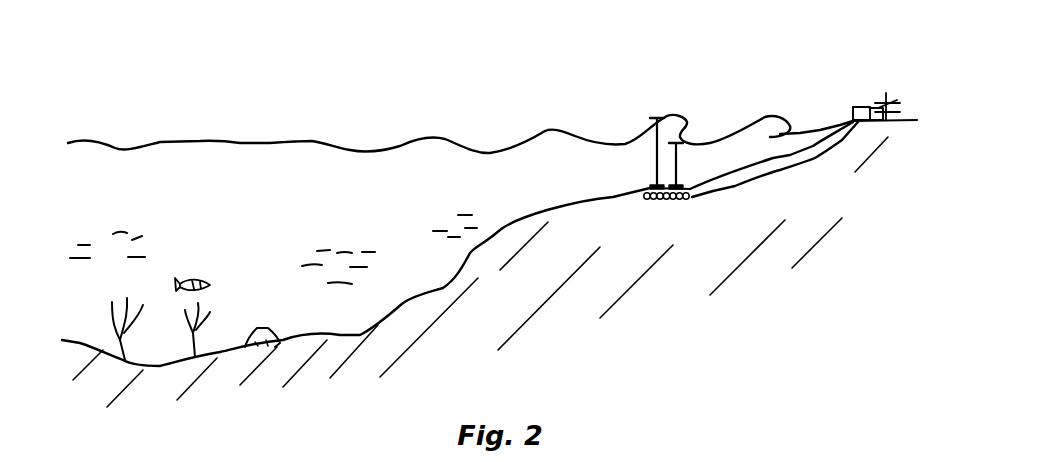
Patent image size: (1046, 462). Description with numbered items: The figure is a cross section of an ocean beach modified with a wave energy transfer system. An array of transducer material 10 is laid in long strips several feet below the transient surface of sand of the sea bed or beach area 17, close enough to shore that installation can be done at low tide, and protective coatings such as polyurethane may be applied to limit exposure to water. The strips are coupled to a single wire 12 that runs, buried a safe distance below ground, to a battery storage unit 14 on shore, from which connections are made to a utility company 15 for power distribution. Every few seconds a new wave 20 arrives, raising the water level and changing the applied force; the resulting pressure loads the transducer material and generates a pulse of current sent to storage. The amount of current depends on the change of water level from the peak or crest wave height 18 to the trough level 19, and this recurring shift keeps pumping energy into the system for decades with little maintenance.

The array of transducer material 10 is at (646, 200).
The single wire 12 is at (722, 185).
The battery storage unit 14 is at (852, 107).
The utility company 15 is at (898, 117).
The sea bed or beach area 17 is at (786, 159).
The peak or crest wave height 18 is at (655, 163).
The trough level 19 is at (680, 161).
The wave 20 is at (687, 111).